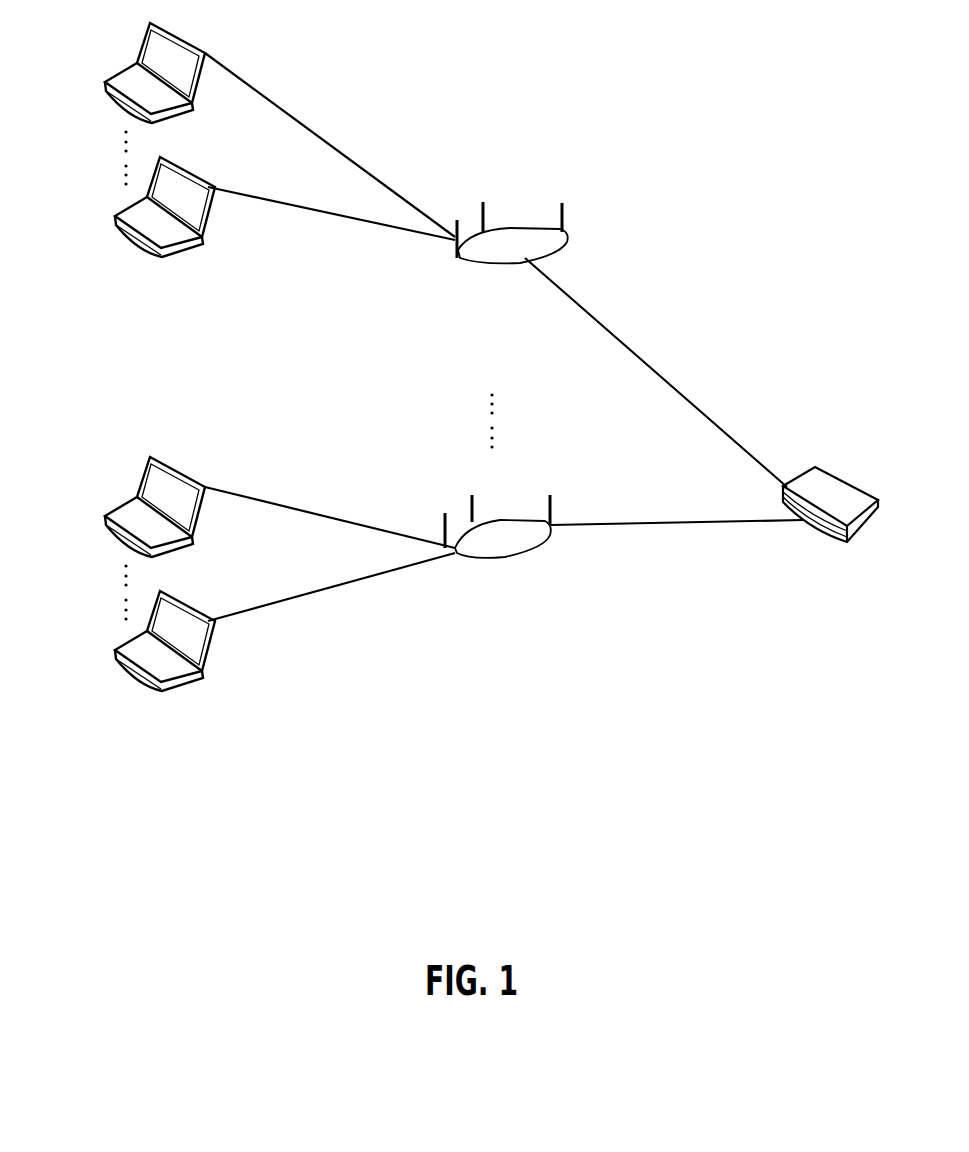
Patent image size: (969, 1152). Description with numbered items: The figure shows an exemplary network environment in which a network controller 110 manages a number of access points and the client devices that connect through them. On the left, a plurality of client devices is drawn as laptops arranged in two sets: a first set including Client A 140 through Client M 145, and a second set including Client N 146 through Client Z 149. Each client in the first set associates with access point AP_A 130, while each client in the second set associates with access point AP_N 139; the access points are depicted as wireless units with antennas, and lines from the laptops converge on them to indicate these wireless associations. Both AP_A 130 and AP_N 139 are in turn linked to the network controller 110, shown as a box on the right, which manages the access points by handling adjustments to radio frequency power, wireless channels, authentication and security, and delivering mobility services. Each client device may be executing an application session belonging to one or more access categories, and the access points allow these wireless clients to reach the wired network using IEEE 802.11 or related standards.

The Client A 140 is at (102, 60).
The Client M 145 is at (117, 287).
The Client N 146 is at (103, 495).
The Client Z 149 is at (117, 722).
The access point A 130 is at (518, 315).
The access point N 139 is at (508, 608).
The network controller 110 is at (843, 602).